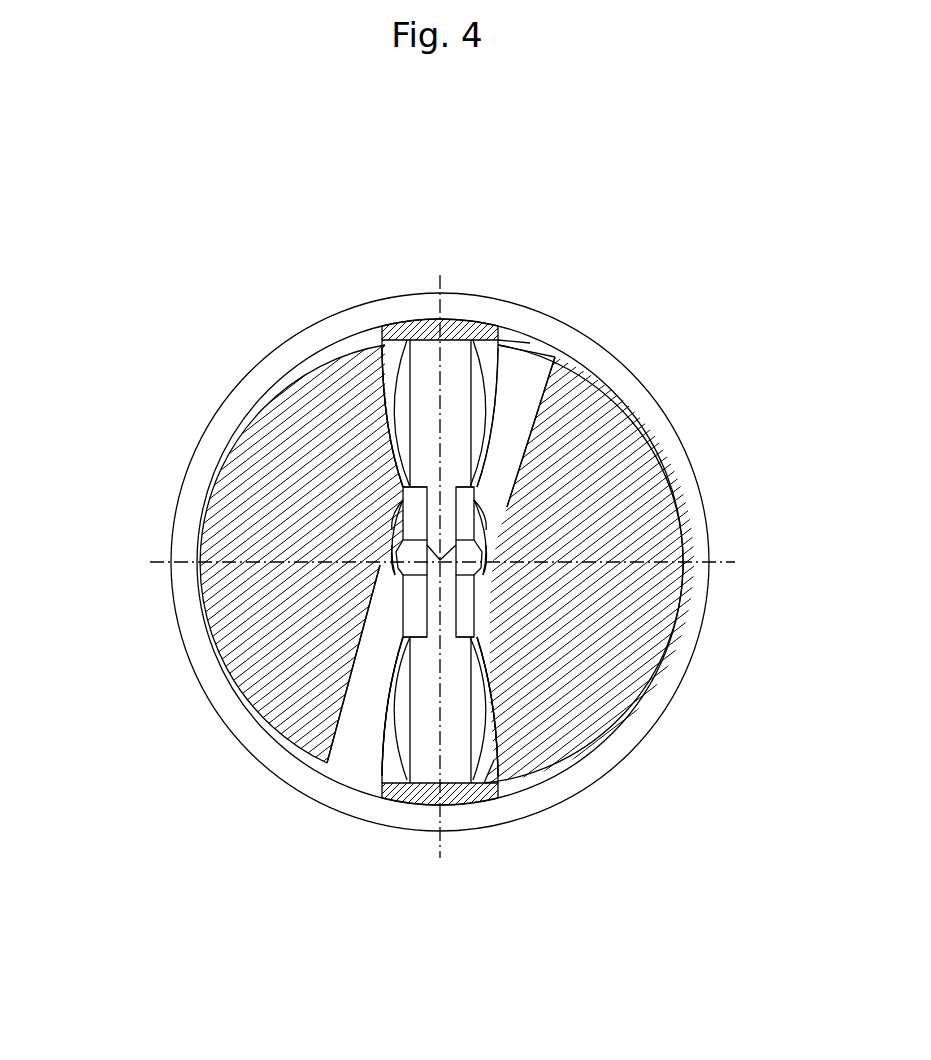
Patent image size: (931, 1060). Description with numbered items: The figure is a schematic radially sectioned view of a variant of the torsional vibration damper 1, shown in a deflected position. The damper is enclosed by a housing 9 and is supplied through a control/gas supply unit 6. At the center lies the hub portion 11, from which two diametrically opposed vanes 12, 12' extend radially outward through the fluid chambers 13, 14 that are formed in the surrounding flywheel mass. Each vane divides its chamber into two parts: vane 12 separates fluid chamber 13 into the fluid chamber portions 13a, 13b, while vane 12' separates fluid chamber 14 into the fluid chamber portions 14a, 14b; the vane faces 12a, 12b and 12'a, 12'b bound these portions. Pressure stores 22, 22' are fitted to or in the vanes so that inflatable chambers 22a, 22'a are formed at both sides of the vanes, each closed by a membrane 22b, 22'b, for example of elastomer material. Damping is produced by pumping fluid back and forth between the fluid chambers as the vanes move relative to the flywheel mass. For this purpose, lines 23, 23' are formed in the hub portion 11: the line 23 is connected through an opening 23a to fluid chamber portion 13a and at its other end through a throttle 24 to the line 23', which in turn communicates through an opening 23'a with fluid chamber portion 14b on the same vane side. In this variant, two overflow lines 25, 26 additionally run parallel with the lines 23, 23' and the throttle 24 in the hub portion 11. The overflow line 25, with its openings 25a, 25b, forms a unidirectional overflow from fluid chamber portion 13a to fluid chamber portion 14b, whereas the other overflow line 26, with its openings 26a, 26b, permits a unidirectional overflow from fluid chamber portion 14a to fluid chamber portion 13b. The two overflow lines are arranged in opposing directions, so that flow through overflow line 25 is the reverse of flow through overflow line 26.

The torsional vibration damper 1 is at (471, 222).
The control/gas supply unit 6 is at (442, 558).
The housing 9 is at (317, 342).
The hub portion 11 is at (465, 562).
The vane 12 is at (440, 339).
The vane face 12a is at (487, 345).
The vane face 12b is at (398, 338).
The vane 12' is at (440, 769).
The vane face 12'a is at (345, 830).
The vane face 12'b is at (495, 853).
The fluid chamber 13 is at (550, 350).
The fluid chamber portion 13a is at (483, 347).
The fluid chamber portion 13b is at (400, 400).
The fluid chamber 14 is at (400, 797).
The fluid chamber portion 14a is at (357, 731).
The fluid chamber portion 14b is at (489, 778).
The pressure store 22 is at (461, 342).
The chamber 22a is at (386, 395).
The membrane 22b is at (402, 440).
The pressure store 22' is at (361, 784).
The chamber 22'a is at (424, 754).
The membrane 22'b is at (399, 768).
The line 23 is at (441, 499).
The opening 23a is at (407, 507).
The line 23' is at (411, 695).
The opening 23'a is at (388, 768).
The throttle 24 is at (400, 552).
The overflow line 25 is at (470, 577).
The opening 25a is at (460, 517).
The opening 25b is at (472, 627).
The overflow line 26 is at (395, 558).
The opening 26a is at (400, 520).
The opening 26b is at (412, 602).